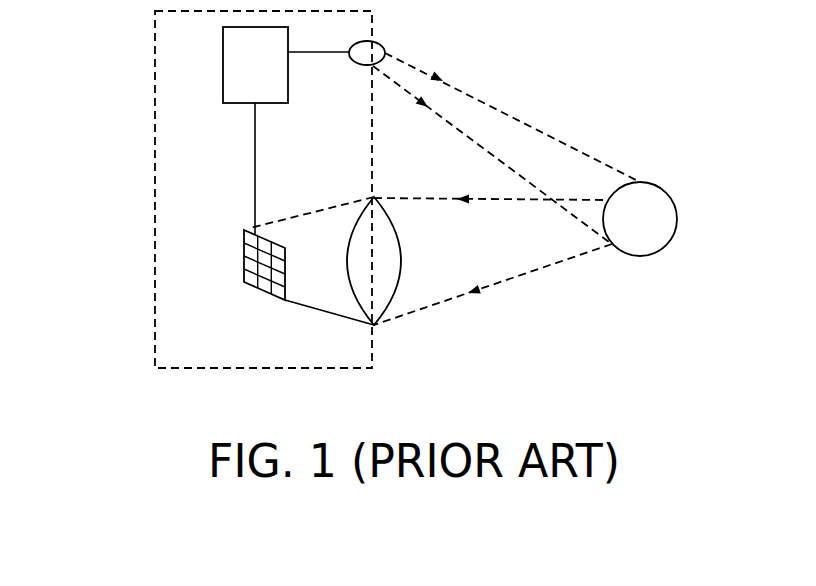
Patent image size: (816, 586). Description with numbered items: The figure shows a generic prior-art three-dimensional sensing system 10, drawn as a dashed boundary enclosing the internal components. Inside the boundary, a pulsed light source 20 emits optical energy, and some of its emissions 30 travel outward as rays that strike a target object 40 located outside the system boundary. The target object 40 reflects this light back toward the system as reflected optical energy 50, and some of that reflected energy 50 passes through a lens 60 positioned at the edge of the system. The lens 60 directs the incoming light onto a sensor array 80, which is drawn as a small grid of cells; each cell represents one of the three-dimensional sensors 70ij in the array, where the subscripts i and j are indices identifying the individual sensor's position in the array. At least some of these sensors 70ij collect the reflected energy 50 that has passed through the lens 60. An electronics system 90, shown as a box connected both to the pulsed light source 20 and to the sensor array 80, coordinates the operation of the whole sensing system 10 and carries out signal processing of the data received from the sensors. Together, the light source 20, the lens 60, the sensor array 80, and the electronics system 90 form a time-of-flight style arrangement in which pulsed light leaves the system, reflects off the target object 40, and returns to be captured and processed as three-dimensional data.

The three-dimensional sensing system 10 is at (130, 90).
The pulsed light source 20 is at (383, 42).
The emissions 30 is at (493, 100).
The target object 40 is at (641, 182).
The reflected optical energy 50 is at (519, 279).
The lens 60 is at (402, 254).
The three-dimensional sensors 70ij is at (254, 252).
The sensor array 80 is at (230, 284).
The electronics system 90 is at (286, 131).